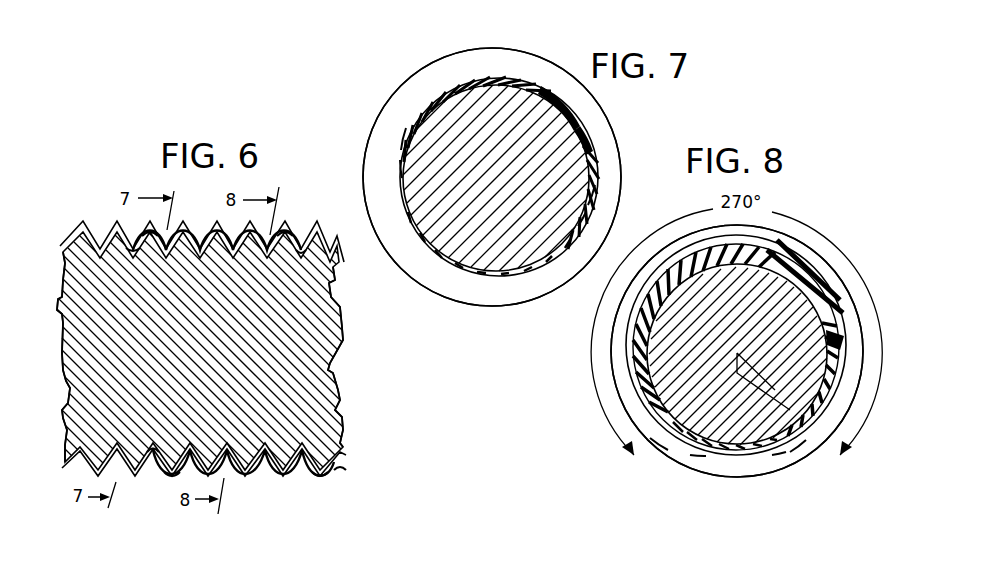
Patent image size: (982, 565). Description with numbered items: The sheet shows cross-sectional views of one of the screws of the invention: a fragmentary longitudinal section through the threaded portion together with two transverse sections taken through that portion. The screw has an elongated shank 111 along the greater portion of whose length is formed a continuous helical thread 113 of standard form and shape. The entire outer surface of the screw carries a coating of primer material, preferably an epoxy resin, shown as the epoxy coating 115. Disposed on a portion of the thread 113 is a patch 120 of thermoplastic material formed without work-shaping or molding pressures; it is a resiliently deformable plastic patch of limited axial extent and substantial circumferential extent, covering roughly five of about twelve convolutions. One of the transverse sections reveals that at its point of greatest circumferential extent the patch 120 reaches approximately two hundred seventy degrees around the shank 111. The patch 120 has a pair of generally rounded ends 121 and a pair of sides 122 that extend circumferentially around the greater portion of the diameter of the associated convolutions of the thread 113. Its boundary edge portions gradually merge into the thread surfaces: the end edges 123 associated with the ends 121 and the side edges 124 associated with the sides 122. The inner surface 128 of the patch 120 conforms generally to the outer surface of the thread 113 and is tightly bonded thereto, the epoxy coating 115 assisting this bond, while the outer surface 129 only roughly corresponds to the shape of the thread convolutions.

In FIG. 6, the shank 111 is at (307, 374).
In FIG. 7, the shank 111 is at (457, 240).
In FIG. 8, the shank 111 is at (672, 383).
In FIG. 6, the helical thread 113 is at (337, 293).
In FIG. 7, the helical thread 113 is at (383, 165).
In FIG. 8, the helical thread 113 is at (713, 467).
In FIG. 6, the epoxy coating 115 is at (96, 236).
In FIG. 7, the epoxy coating 115 is at (567, 122).
In FIG. 8, the epoxy coating 115 is at (640, 343).
In FIG. 6, the patch 120 is at (279, 218).
In FIG. 7, the patch 120 is at (483, 57).
In FIG. 8, the patch 120 is at (780, 240).
In FIG. 7, the ends 121 is at (401, 150).
In FIG. 8, the ends 121 is at (673, 447).
In FIG. 6, the sides 122 is at (140, 236).
In FIG. 7, the end edges 123 is at (401, 160).
In FIG. 8, the end edges 123 is at (690, 453).
In FIG. 6, the side edges 124 is at (132, 248).
In FIG. 7, the inner surface 128 is at (552, 88).
In FIG. 8, the inner surface 128 is at (817, 318).
In FIG. 7, the outer surface 129 is at (508, 76).
In FIG. 8, the outer surface 129 is at (800, 258).